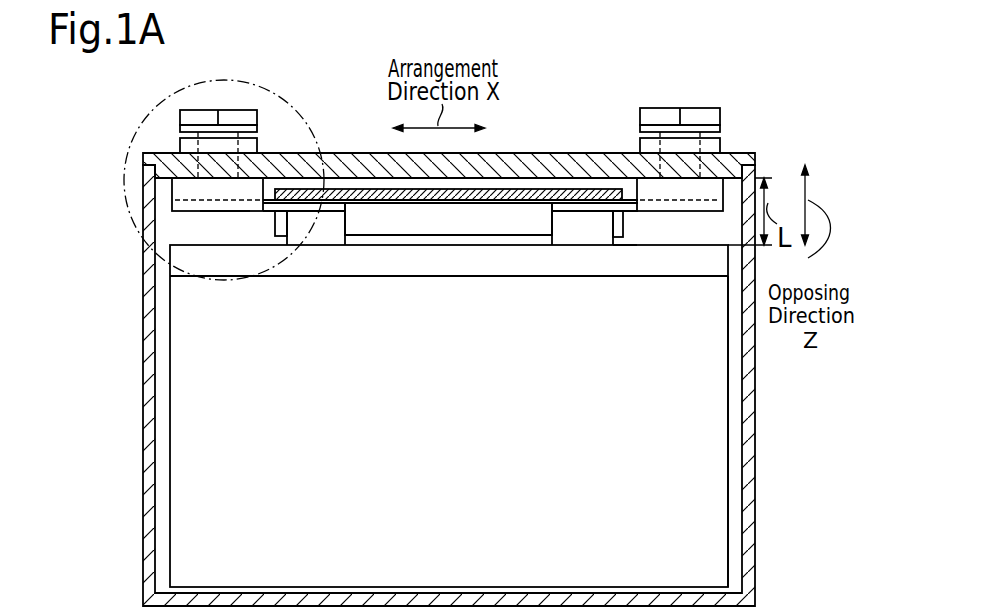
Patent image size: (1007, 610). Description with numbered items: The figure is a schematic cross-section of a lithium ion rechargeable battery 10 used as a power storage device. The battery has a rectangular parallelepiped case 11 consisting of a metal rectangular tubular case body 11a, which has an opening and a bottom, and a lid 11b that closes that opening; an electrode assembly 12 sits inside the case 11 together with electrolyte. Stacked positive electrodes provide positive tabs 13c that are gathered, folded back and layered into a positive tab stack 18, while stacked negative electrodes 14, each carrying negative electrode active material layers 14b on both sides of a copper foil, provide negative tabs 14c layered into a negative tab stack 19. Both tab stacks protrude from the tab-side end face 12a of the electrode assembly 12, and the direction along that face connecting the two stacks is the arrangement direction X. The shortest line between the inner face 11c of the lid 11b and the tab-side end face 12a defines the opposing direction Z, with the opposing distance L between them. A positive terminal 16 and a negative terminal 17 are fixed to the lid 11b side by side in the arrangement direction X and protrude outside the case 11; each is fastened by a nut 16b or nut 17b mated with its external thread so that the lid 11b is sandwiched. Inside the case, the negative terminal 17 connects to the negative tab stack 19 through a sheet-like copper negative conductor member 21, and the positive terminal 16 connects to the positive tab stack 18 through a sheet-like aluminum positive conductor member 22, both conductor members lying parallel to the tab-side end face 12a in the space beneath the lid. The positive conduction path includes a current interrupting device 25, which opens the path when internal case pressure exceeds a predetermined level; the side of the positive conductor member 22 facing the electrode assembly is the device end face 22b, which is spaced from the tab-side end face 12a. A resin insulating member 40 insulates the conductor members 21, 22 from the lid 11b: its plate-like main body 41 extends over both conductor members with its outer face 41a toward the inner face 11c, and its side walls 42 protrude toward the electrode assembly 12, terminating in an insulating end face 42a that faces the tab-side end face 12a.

The rechargeable battery 10 is at (750, 116).
The case 11 is at (75, 153).
The case body 11a is at (146, 202).
The lid 11b is at (142, 158).
The inner face of the lid 11c is at (363, 181).
The electrode assembly 12 is at (736, 433).
The tab-side end face 12a is at (633, 242).
The positive tab 13c is at (333, 238).
The negative electrode 14 is at (713, 543).
The negative electrode active material layer 14b is at (713, 478).
The negative tab 14c is at (577, 240).
The positive terminal 16 is at (182, 145).
The nut 16b is at (280, 137).
The negative terminal 17 is at (650, 133).
The nut 17b is at (720, 150).
The positive tab stack 18 is at (308, 251).
The negative tab stack 19 is at (620, 225).
The negative conductor member 21 is at (551, 202).
The positive conductor member 22 is at (266, 207).
The device end face 22b is at (220, 212).
The current interrupting device 25 is at (228, 217).
The insulating member 40 is at (515, 188).
The main body 41 is at (440, 204).
The outer face 41a is at (392, 183).
The side wall 42 is at (488, 226).
The insulating end face 42a is at (428, 237).